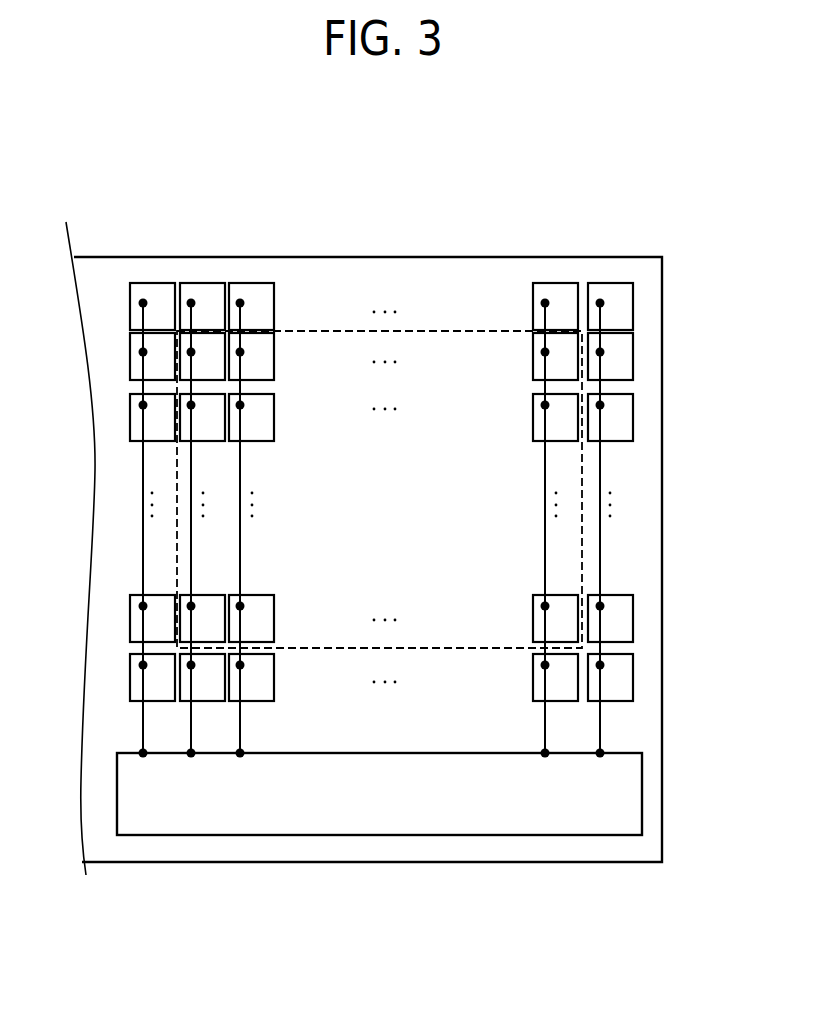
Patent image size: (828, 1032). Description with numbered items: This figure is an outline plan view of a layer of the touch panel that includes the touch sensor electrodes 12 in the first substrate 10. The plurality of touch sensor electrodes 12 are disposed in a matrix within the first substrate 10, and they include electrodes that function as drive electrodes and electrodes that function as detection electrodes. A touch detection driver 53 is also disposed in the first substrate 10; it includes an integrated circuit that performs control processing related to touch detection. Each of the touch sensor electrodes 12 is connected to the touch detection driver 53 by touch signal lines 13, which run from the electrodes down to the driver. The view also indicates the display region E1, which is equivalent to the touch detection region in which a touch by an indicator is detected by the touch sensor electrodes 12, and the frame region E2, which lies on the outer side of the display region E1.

The first substrate 10 is at (618, 254).
The touch sensor electrodes 12 is at (370, 492).
The touch signal lines 13 is at (361, 483).
The touch detection driver 53 is at (642, 780).
The display region E1 is at (470, 330).
The frame region E2 is at (651, 287).